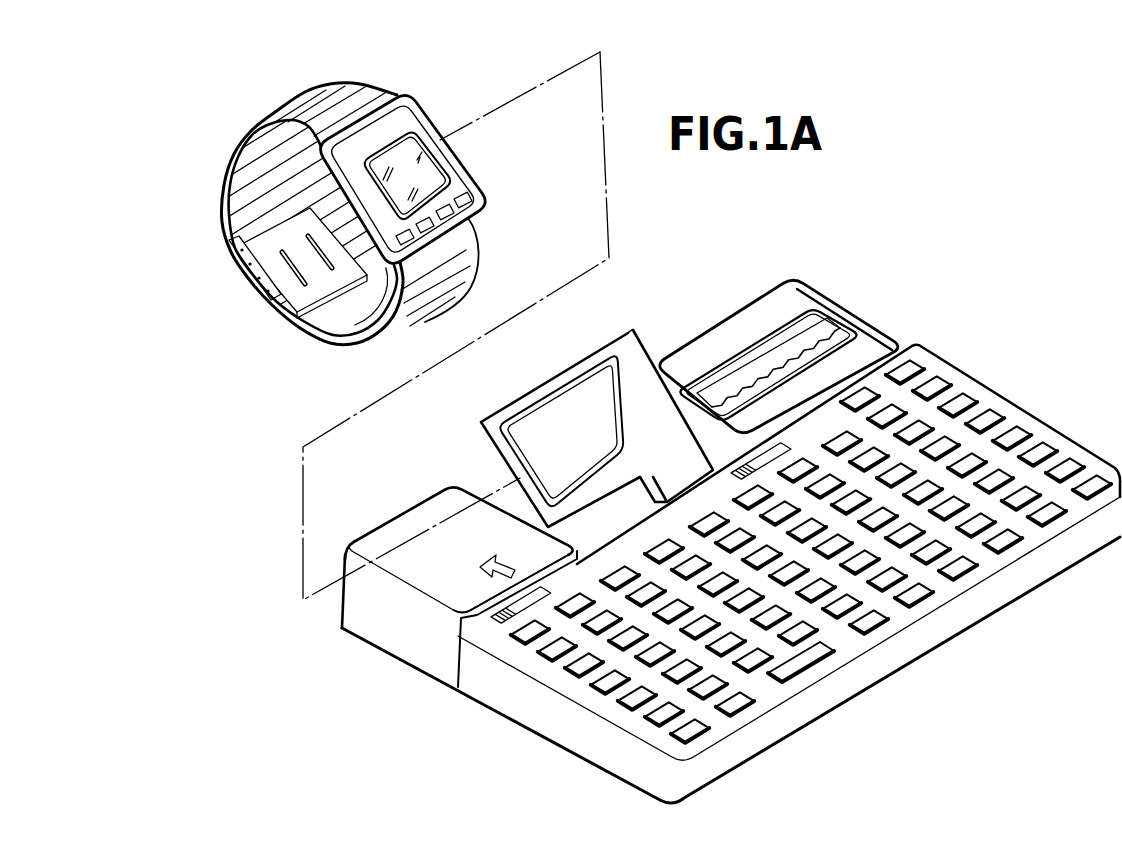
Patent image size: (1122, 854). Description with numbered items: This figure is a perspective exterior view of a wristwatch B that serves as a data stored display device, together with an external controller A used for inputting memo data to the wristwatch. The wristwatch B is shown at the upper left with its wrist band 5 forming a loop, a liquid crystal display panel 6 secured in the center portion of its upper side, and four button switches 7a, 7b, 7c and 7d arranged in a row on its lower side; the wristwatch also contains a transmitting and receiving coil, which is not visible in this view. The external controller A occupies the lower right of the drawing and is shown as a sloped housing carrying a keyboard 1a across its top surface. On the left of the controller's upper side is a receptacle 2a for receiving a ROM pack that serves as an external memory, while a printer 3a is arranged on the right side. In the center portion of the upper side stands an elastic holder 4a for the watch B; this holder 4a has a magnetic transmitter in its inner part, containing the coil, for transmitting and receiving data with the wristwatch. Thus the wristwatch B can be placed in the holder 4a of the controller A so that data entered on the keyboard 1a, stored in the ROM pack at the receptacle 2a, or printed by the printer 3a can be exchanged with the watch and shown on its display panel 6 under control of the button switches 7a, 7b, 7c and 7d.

The external controller A is at (899, 323).
The wristwatch B is at (436, 106).
The keyboard 1a is at (985, 445).
The receptacle 2a is at (440, 573).
The printer 3a is at (779, 305).
The elastic holder 4a is at (548, 410).
The wrist band 5 is at (218, 212).
The liquid crystal display panel 6 is at (420, 187).
The button switch 7a is at (430, 229).
The button switch 7b is at (449, 214).
The button switch 7c is at (468, 201).
The button switch 7d is at (407, 244).